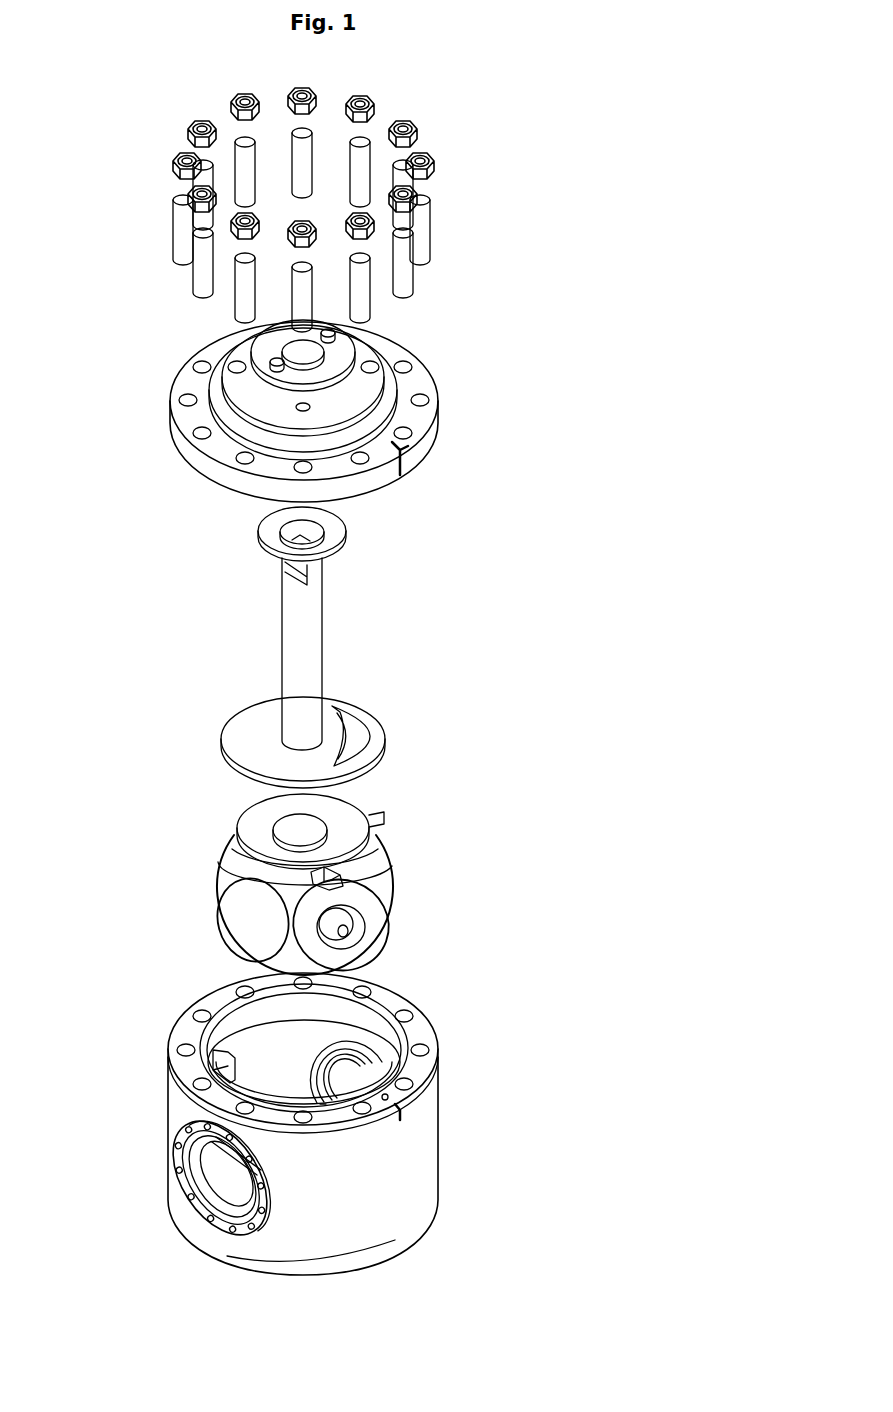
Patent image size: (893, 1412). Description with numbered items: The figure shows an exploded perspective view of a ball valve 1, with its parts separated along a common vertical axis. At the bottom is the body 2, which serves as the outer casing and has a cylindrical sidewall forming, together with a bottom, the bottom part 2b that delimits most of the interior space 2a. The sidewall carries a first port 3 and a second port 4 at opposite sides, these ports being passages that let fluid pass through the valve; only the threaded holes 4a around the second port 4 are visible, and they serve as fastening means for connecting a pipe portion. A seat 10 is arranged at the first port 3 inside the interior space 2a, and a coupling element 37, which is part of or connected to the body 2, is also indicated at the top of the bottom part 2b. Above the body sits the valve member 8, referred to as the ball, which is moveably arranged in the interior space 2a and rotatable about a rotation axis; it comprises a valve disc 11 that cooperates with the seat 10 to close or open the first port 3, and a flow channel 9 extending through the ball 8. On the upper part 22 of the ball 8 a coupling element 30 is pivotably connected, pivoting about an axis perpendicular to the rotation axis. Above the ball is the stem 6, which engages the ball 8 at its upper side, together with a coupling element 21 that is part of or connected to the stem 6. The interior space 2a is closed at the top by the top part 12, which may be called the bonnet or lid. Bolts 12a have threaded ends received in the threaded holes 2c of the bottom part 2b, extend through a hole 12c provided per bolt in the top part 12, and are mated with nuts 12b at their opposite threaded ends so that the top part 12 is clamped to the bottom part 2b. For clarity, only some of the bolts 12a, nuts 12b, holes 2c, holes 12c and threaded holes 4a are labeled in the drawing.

The ball valve 1 is at (142, 542).
The body 2 is at (284, 1134).
The interior space 2a is at (293, 1050).
The bottom part 2b is at (410, 1195).
The threaded holes 2c is at (362, 992).
The first port 3 is at (368, 1080).
The second port 4 is at (188, 1222).
The threaded holes 4a is at (240, 1227).
The stem 6 is at (305, 645).
The valve member 8 is at (304, 888).
The flow channel 9 is at (247, 922).
The seat 10 is at (365, 1053).
The valve disc 11 is at (232, 850).
The top part 12 is at (418, 382).
The bolts 12a is at (240, 300).
The nuts 12b is at (230, 102).
The holes 12c is at (197, 430).
The coupling element 21 is at (372, 723).
The upper part 22 is at (340, 812).
The coupling element 30 is at (340, 880).
The coupling element 37 is at (215, 1055).